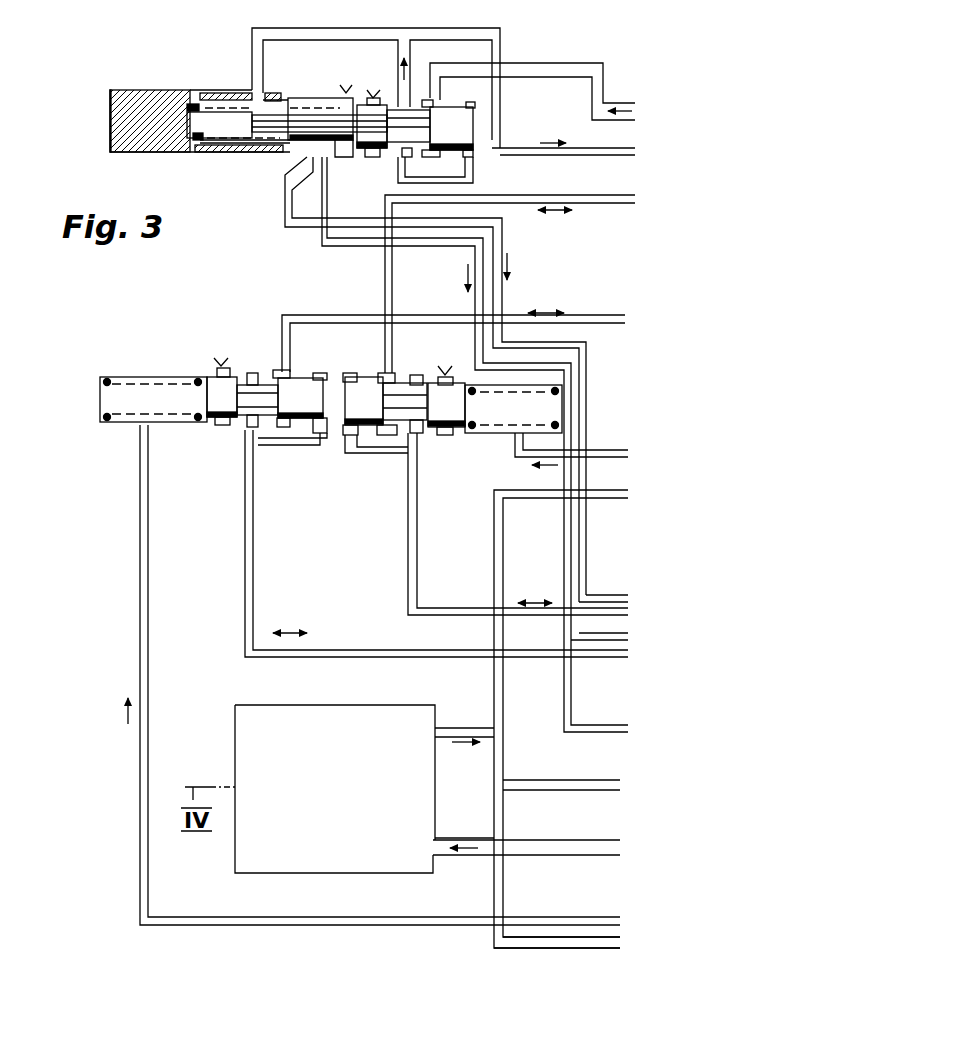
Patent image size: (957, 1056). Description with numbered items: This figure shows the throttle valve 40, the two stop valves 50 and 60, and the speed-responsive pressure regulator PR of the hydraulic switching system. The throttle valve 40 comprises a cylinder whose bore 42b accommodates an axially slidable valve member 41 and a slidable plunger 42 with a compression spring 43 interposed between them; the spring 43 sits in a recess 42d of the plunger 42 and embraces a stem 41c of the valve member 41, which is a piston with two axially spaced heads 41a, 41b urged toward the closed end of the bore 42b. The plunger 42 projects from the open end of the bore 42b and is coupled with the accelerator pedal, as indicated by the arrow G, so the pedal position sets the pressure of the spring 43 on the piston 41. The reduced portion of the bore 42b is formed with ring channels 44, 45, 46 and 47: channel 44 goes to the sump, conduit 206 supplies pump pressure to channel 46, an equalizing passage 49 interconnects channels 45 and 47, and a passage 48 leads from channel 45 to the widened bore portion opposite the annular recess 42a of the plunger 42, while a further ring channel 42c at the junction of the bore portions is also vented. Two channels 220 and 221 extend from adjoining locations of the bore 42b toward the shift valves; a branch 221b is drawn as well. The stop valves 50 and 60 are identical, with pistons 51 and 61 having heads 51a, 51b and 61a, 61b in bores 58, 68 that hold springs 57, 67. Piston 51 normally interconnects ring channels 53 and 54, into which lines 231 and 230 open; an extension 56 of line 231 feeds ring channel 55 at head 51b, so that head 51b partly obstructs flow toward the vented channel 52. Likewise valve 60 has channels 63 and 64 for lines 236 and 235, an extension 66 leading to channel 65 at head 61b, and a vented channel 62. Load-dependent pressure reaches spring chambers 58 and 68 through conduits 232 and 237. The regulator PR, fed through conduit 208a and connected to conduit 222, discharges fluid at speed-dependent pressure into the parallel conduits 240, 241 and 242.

The throttle valve 40 is at (216, 55).
The arrow indicating accelerator coupling G is at (106, 124).
The plunger 42 is at (150, 128).
The annular peripheral recess 42a is at (222, 92).
The cylinder bore 42b is at (300, 150).
The ring channel 42c is at (349, 96).
The recess 42d is at (239, 181).
The compression spring 43 is at (196, 146).
The valve member 41 is at (405, 122).
The piston head 41a is at (385, 137).
The piston head 41b is at (468, 137).
The stem 41c is at (292, 118).
The ring channel 44 is at (370, 157).
The ring channel 45 is at (405, 157).
The ring channel 46 is at (433, 103).
The ring channel 47 is at (476, 104).
The passage 48 is at (308, 35).
The equalizing passage 49 is at (474, 180).
The conduit 206 is at (558, 70).
The conduit 222 is at (603, 156).
The conduit 235 is at (546, 204).
The channel 220 is at (290, 203).
The channel 221 is at (341, 243).
The conduit branch 221b is at (620, 594).
The extension 230 is at (417, 316).
The stop valve 50 is at (219, 335).
The piston 51 is at (262, 397).
The piston head 51a is at (235, 403).
The piston head 51b is at (318, 403).
The vented ring channel 52 is at (220, 424).
The ring channel 53 is at (250, 426).
The ring channel 54 is at (278, 372).
The ring channel 55 is at (317, 374).
The extension 56 is at (310, 446).
The compression spring 57 is at (133, 378).
The bore 58 is at (130, 405).
The stop valve 60 is at (446, 517).
The piston 61 is at (402, 392).
The piston head 61a is at (462, 405).
The piston head 61b is at (380, 405).
The vented channel 62 is at (446, 436).
The ring channel 63 is at (418, 435).
The ring channel 64 is at (383, 374).
The ring channel 65 is at (347, 374).
The extension 66 is at (376, 455).
The compression spring 67 is at (470, 388).
The bore 68 is at (481, 405).
The branch 237 is at (620, 452).
The line 236 is at (455, 615).
The line 231 is at (345, 658).
The branch 232 is at (190, 920).
The conduit 240 is at (500, 696).
The conduit 241 is at (553, 787).
The conduit 242 is at (540, 950).
The conduit 208a is at (549, 856).
The speed-responsive pressure regulator PR is at (364, 789).